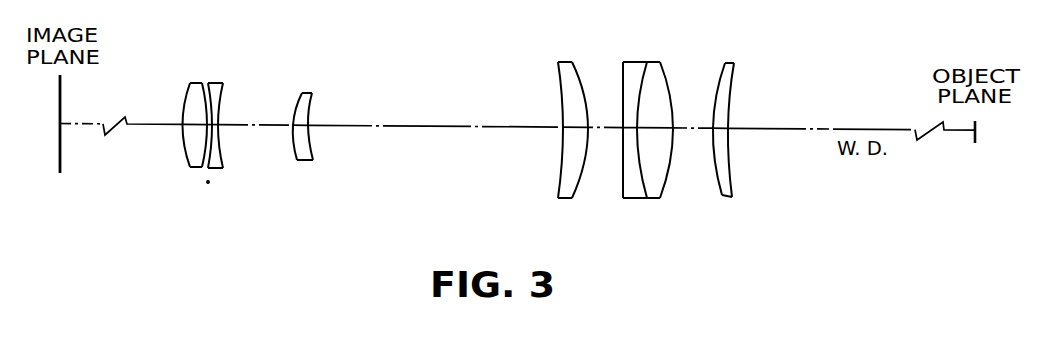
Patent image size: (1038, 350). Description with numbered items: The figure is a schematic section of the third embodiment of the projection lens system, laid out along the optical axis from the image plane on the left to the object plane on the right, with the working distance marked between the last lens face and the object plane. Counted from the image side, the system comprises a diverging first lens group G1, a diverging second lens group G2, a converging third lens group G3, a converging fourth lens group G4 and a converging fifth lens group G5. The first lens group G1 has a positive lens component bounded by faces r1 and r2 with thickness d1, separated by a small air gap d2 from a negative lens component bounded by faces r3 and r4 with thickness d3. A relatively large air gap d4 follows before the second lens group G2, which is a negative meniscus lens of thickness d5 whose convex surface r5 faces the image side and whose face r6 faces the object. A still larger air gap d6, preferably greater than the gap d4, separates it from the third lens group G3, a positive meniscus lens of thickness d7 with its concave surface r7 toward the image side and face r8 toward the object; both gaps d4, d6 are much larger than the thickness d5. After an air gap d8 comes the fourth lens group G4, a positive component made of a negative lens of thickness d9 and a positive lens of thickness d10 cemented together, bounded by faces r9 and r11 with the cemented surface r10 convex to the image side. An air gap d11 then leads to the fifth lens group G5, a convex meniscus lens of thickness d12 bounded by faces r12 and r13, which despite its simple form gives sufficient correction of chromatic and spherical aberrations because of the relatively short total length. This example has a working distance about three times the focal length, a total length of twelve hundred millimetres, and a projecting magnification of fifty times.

The first lens group G1 is at (237, 47).
The second lens group G2 is at (303, 93).
The third lens group G3 is at (570, 61).
The fourth lens group G4 is at (678, 50).
The fifth lens group G5 is at (732, 62).
The first lens face radius of curvature r1 is at (187, 161).
The second lens face radius of curvature r2 is at (194, 168).
The third lens face radius of curvature r3 is at (212, 168).
The fourth lens face radius of curvature r4 is at (226, 152).
The fifth lens face radius of curvature r5 is at (297, 159).
The sixth lens face radius of curvature r6 is at (313, 156).
The seventh lens face radius of curvature r7 is at (560, 186).
The eighth lens face radius of curvature r8 is at (578, 193).
The ninth lens face radius of curvature r9 is at (621, 191).
The tenth lens face radius of curvature r10 is at (646, 199).
The eleventh lens face radius of curvature r11 is at (664, 191).
The twelfth lens face radius of curvature r12 is at (720, 194).
The thirteenth lens face radius of curvature r13 is at (733, 189).
The first lens thickness d1 is at (190, 121).
The second lens gap d2 is at (207, 122).
The third lens thickness d3 is at (212, 122).
The fourth lens gap d4 is at (255, 114).
The fifth lens thickness d5 is at (310, 120).
The sixth lens gap d6 is at (435, 114).
The seventh lens thickness d7 is at (570, 125).
The eighth lens gap d8 is at (605, 117).
The ninth lens thickness d9 is at (628, 127).
The tenth lens thickness d10 is at (657, 127).
The eleventh lens gap d11 is at (693, 117).
The twelfth lens thickness d12 is at (725, 128).